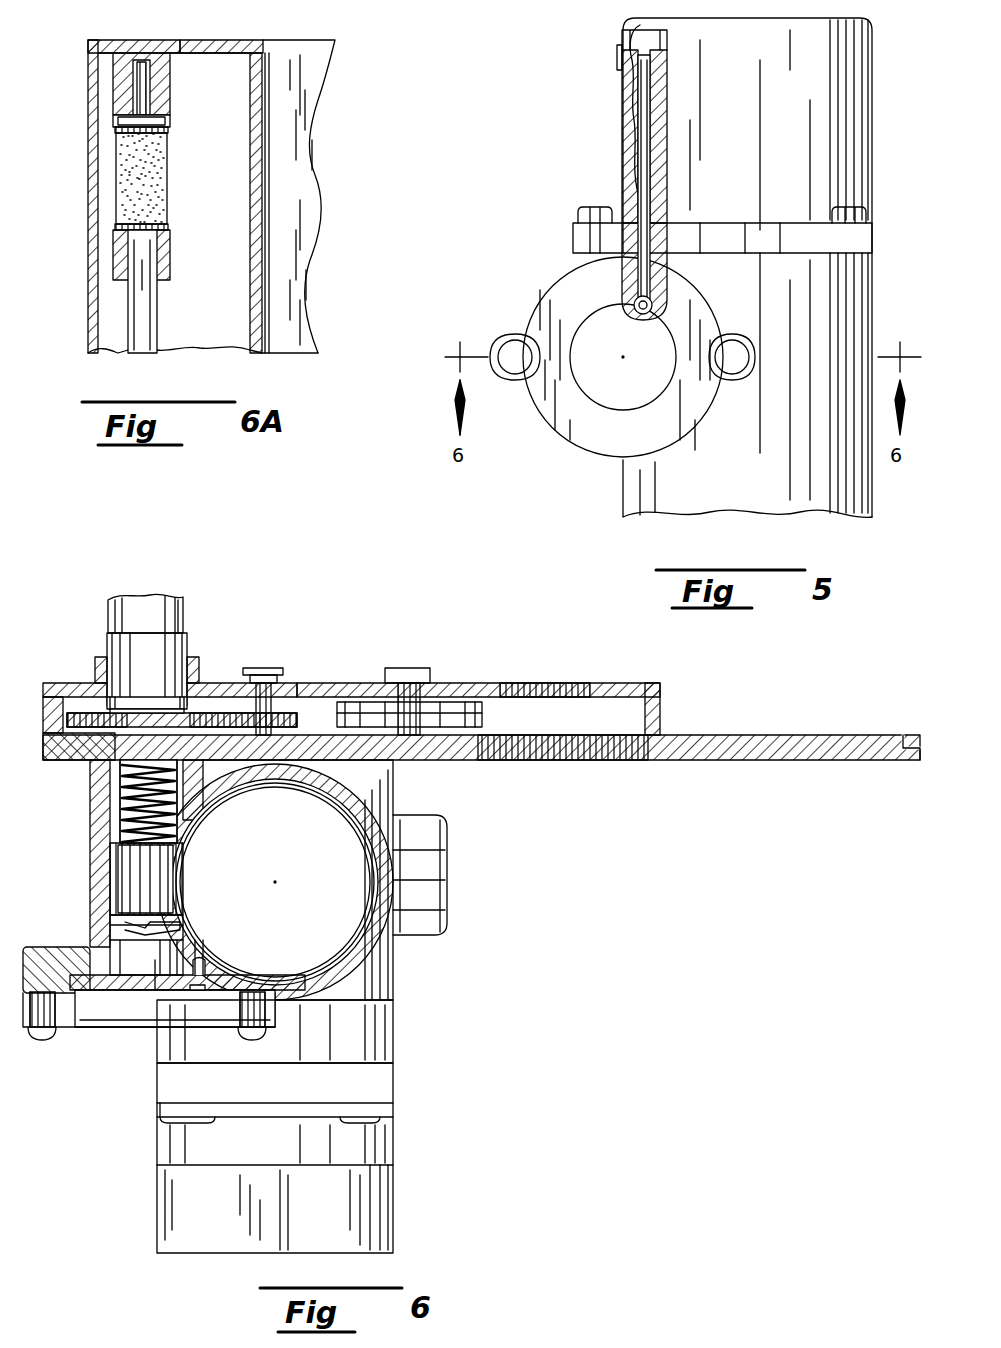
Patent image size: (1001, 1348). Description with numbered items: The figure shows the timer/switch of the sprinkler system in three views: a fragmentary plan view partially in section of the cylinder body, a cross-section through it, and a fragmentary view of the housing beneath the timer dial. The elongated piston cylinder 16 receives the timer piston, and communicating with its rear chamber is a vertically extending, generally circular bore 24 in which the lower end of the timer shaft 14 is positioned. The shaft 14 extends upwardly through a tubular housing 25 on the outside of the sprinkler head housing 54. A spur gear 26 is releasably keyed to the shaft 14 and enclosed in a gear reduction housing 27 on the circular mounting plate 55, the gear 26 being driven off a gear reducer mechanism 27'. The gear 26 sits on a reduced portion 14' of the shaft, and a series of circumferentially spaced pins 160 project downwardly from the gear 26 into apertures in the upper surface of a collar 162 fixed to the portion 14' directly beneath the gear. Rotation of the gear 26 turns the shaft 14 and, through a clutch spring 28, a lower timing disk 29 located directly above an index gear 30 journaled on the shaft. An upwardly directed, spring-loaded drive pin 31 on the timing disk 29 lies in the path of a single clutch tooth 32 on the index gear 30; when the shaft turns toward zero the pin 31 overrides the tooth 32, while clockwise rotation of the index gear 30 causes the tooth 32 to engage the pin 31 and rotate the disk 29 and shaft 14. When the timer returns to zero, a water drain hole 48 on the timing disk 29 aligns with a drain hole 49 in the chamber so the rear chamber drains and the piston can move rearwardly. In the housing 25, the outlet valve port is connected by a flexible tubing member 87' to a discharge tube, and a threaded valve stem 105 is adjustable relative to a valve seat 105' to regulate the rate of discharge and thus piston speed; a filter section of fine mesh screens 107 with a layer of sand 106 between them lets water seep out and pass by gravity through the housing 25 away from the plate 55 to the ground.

In FIG. 6, the timer shaft 14 is at (123, 637).
In FIG. 6, the reduced portion of the shaft 14' is at (66, 759).
In FIG. 5, the piston cylinder 16 is at (620, 480).
In FIG. 5, the bore 24 is at (555, 437).
In FIG. 6, the bore 24 is at (90, 830).
In FIG. 6A, the tubular housing 25 is at (88, 328).
In FIG. 6A, the spur gear 26 is at (98, 42).
In FIG. 6, the spur gear 26 is at (195, 712).
In FIG. 6, the gear reduction housing 27 is at (408, 685).
In FIG. 6, the gear reducer mechanism 27' is at (285, 685).
In FIG. 6, the clutch spring 28 is at (125, 790).
In FIG. 5, the timing disk 29 is at (585, 317).
In FIG. 6, the timing disk 29 is at (180, 980).
In FIG. 6, the index gear 30 is at (112, 870).
In FIG. 6, the drive pin 31 is at (170, 930).
In FIG. 6, the clutch tooth 32 is at (140, 930).
In FIG. 5, the water drain hole 48 is at (632, 300).
In FIG. 6, the water drain hole 48 is at (195, 990).
In FIG. 5, the drain hole 49 is at (640, 118).
In FIG. 6, the drain hole 49 is at (205, 972).
In FIG. 6A, the sprinkler head housing 54 is at (305, 265).
In FIG. 6, the mounting plate 55 is at (697, 760).
In FIG. 6A, the flexible tubing member 87' is at (100, 291).
In FIG. 6A, the threaded valve stem 105 is at (100, 96).
In FIG. 6A, the valve seat 105' is at (97, 113).
In FIG. 6A, the layer of sand 106 is at (150, 180).
In FIG. 6A, the fine mesh screens 107 is at (135, 131).
In FIG. 6, the pins 160 is at (118, 705).
In FIG. 6, the collar 162 is at (122, 695).